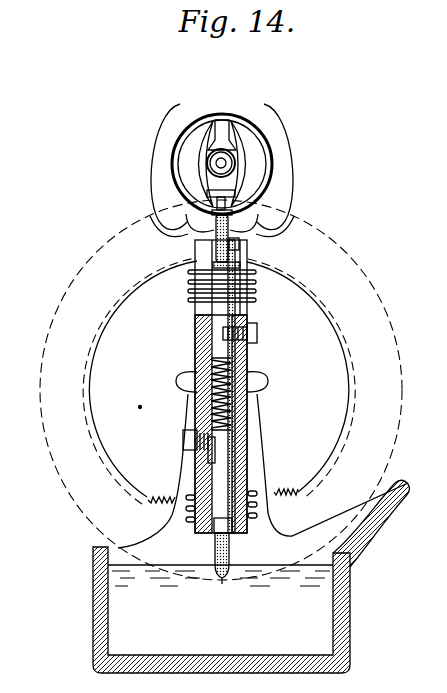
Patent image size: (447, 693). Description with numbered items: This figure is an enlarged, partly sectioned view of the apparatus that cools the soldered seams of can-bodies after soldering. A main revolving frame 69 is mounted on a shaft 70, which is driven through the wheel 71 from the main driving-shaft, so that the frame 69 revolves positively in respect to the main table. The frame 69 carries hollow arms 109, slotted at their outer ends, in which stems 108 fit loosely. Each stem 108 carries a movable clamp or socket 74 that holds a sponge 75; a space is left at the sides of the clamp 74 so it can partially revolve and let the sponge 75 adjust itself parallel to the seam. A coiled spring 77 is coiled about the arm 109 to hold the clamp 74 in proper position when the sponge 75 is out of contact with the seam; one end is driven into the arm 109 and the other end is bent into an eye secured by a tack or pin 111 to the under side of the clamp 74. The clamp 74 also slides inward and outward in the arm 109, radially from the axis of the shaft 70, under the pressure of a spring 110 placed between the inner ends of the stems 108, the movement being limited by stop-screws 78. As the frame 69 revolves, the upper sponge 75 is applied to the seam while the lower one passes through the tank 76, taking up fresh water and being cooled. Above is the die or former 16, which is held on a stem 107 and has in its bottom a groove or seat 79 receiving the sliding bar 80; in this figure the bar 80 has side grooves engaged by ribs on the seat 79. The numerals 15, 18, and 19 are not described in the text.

The wheel 15 is at (222, 141).
The die or former 16 is at (176, 150).
The guide loop 18 is at (241, 167).
The spoke 19 is at (216, 110).
The main revolving frame 69 is at (256, 383).
The shaft 70 is at (188, 386).
The wheel 71 is at (347, 380).
The sponge-clamp 74 is at (214, 240).
The sponge 75 is at (240, 242).
The tank 76 is at (352, 595).
The coiled spring 77 is at (192, 290).
The stop-screw 78 is at (258, 335).
The groove or seat 79 is at (207, 192).
The sliding bar 80 is at (278, 209).
The stem 107 is at (217, 165).
The stem 108 is at (212, 331).
The hollow arm 109 is at (236, 303).
The spring 110 is at (226, 392).
The tack or pin 111 is at (226, 274).